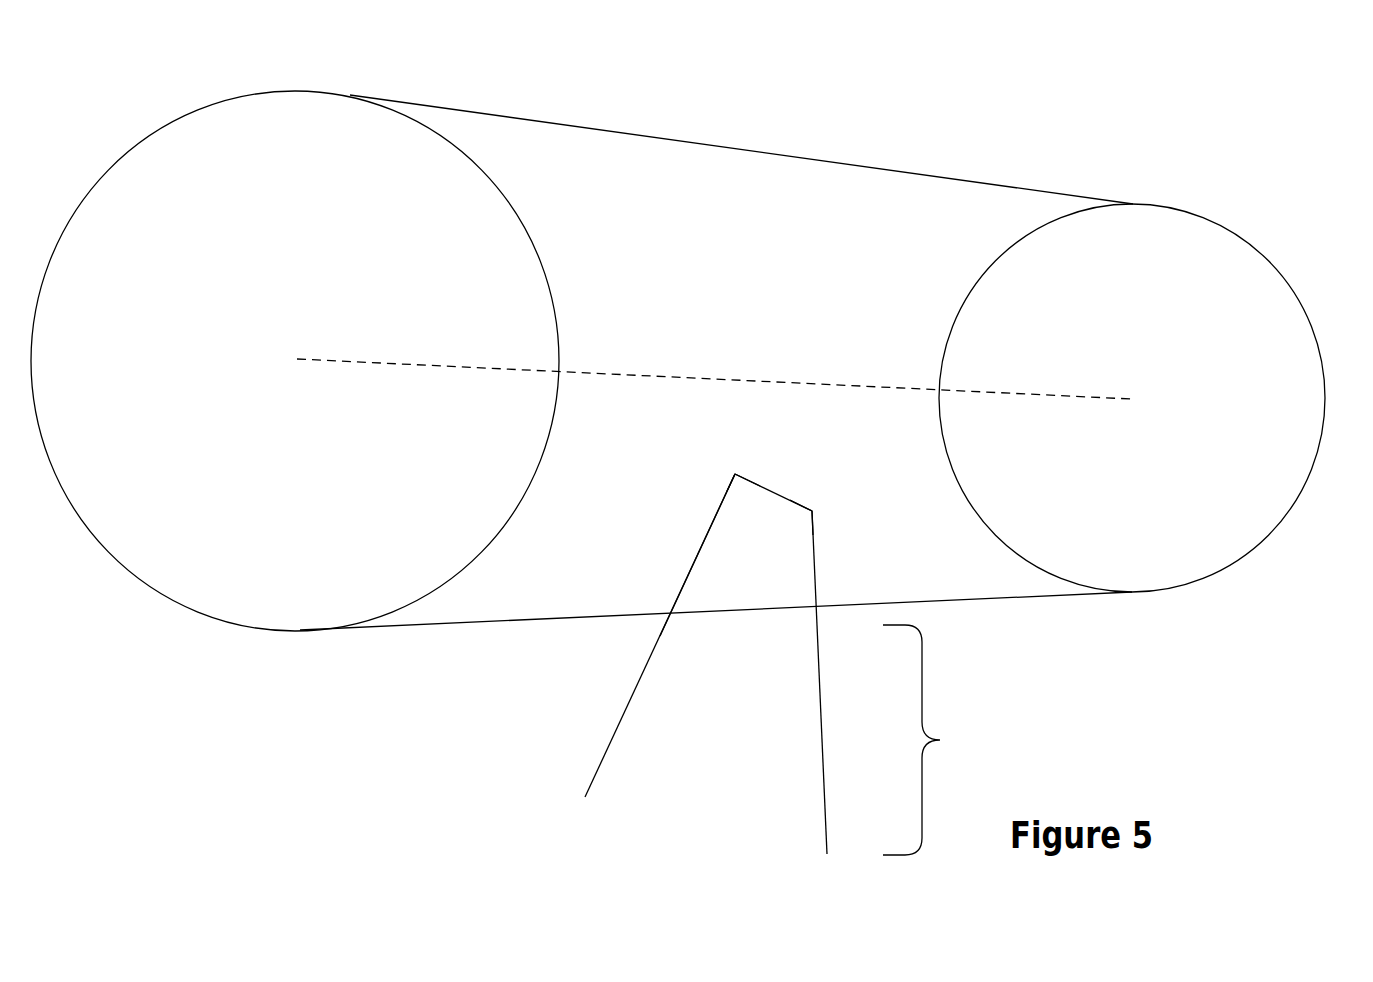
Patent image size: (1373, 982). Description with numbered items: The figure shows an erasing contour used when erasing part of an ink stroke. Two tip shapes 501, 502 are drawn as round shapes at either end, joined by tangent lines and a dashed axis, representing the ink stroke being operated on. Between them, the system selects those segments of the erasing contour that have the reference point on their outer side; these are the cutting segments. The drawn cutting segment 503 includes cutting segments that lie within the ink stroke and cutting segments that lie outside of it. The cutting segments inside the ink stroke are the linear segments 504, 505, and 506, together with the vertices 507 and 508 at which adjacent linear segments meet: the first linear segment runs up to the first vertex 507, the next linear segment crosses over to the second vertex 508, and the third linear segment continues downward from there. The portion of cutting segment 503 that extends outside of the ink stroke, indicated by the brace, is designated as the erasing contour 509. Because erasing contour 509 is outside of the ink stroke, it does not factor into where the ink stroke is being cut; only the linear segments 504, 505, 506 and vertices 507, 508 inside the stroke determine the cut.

The tip shape 501 is at (220, 102).
The tip shape 502 is at (1244, 238).
The cutting segment 503 is at (625, 713).
The linear segment 504 is at (699, 547).
The linear segment 505 is at (769, 486).
The linear segment 506 is at (815, 558).
The vertex 507 is at (735, 474).
The vertex 508 is at (812, 511).
The erasing contour 509 is at (953, 740).